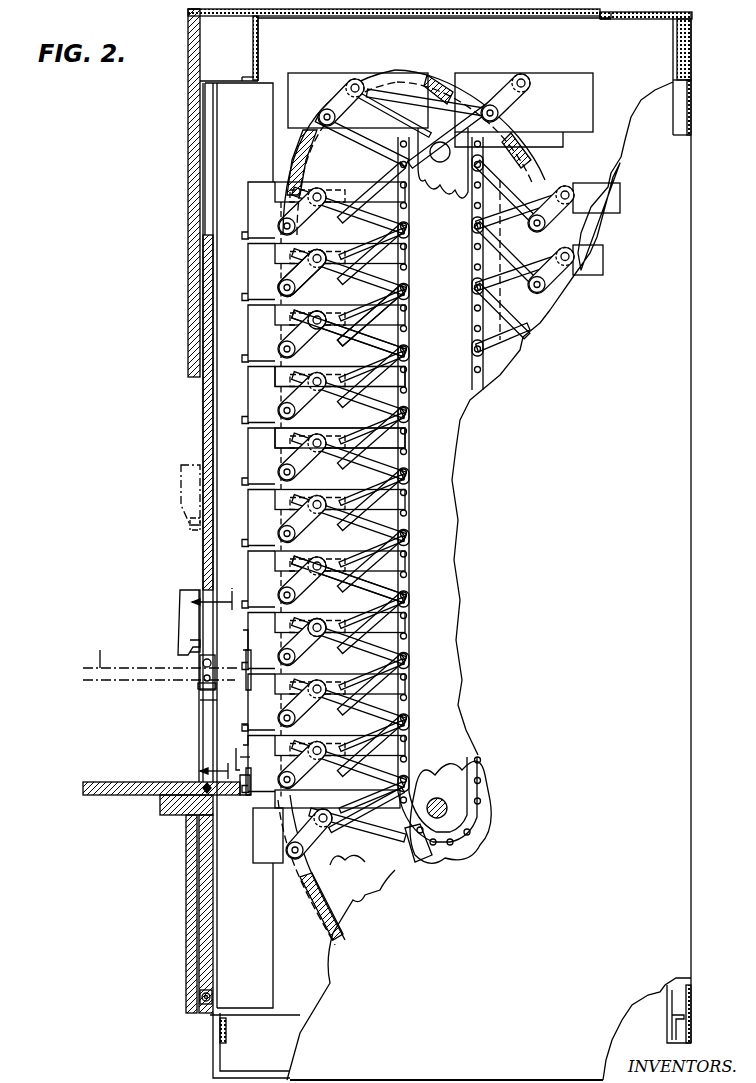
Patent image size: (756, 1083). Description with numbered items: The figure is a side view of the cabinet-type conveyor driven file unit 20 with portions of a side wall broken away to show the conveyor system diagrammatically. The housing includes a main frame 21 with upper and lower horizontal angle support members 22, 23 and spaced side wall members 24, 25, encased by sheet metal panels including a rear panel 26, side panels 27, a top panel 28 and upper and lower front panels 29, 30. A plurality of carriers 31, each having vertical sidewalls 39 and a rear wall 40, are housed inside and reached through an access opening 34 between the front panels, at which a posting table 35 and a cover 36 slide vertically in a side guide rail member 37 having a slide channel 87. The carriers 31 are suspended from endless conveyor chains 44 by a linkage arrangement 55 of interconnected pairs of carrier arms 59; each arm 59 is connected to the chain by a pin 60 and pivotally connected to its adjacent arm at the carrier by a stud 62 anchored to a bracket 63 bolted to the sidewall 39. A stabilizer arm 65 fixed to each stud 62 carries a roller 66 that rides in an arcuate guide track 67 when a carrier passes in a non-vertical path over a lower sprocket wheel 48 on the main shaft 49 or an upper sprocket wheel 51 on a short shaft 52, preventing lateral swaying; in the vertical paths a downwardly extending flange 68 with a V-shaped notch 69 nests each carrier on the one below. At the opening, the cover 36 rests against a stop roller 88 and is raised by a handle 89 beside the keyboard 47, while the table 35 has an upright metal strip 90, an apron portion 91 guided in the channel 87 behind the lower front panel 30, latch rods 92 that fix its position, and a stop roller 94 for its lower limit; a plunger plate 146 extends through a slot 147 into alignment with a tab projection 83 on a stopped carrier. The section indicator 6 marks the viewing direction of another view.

The file unit 20 is at (183, 25).
The main frame 21 is at (657, 29).
The upper horizontal angle support members 22 is at (255, 44).
The lower horizontal angle support members 23 is at (213, 1045).
The side wall member 24 is at (544, 49).
The side wall member 25 is at (656, 128).
The rear panel 26 is at (692, 100).
The side panels 27 is at (692, 322).
The top panel 28 is at (447, 16).
The upper front panel 29 is at (188, 192).
The lower front panel 30 is at (186, 943).
The carrier 31 is at (260, 870).
The access opening 34 is at (215, 703).
The posting table 35 is at (95, 782).
The cover 36 is at (200, 415).
The side guide rail member 37 is at (263, 85).
The sidewall 39 is at (412, 382).
The rear wall 40 is at (410, 443).
The conveyor chain 44 is at (410, 258).
The keyboard 47 is at (182, 486).
The lower sprocket wheel 48 is at (420, 770).
The main shaft 49 is at (486, 811).
The upper sprocket wheel 51 is at (437, 182).
The short shaft 52 is at (460, 205).
The linkage arrangement 55 is at (416, 585).
The carrier arm 59 is at (380, 335).
The pin 60 is at (410, 286).
The stud 62 is at (312, 185).
The bracket 63 is at (372, 842).
The stabilizer arm 65 is at (353, 88).
The roller 66 is at (548, 225).
The arcuate guide track 67 is at (438, 80).
The flange 68 is at (293, 893).
The V-shaped notch 69 is at (365, 885).
The tab projection 83 is at (243, 795).
The slide channel 87 is at (210, 162).
The stop roller 88 is at (200, 660).
The handle 89 is at (192, 522).
The upright metal strip 90 is at (238, 765).
The apron portion 91 is at (213, 948).
The latch rod 92 is at (200, 686).
The stop roller 94 is at (212, 996).
The plunger plate 146 is at (250, 662).
The slot 147 is at (243, 648).
The section line 6 is at (214, 674).